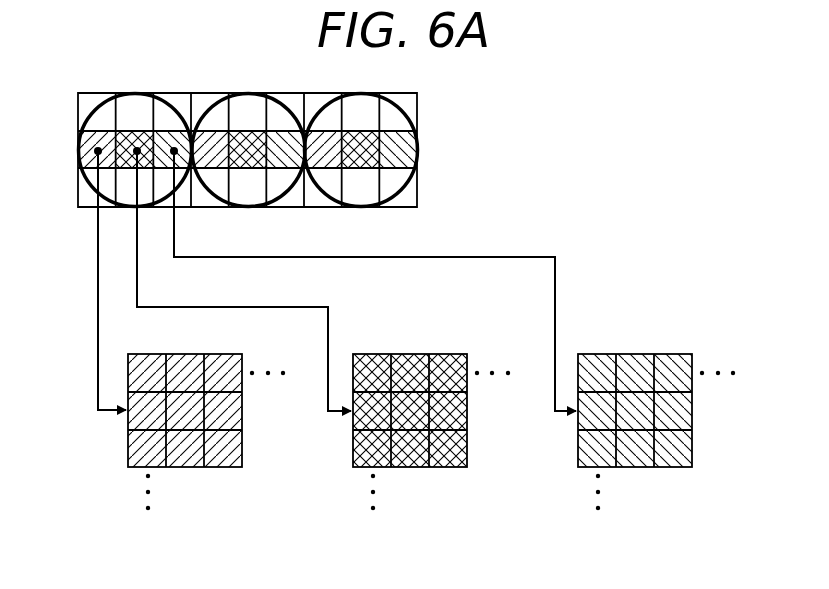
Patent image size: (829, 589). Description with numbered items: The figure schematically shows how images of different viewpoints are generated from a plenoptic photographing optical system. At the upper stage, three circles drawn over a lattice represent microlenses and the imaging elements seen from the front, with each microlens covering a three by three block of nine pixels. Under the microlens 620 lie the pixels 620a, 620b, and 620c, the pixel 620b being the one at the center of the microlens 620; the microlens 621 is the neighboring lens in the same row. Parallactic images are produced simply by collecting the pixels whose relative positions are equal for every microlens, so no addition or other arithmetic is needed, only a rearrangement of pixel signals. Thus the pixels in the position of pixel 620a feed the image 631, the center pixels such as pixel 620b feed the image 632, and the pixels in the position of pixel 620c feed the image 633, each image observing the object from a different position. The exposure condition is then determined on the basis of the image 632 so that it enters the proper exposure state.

The microlens 620 is at (187, 184).
The microlens 621 is at (297, 184).
The pixel under the microlens 620a is at (100, 128).
The pixel under the microlens 620b is at (138, 128).
The pixel under the microlens 620c is at (173, 128).
The image of different viewpoint 631 is at (183, 468).
The image of different viewpoint 632 is at (410, 468).
The image of different viewpoint 633 is at (633, 468).